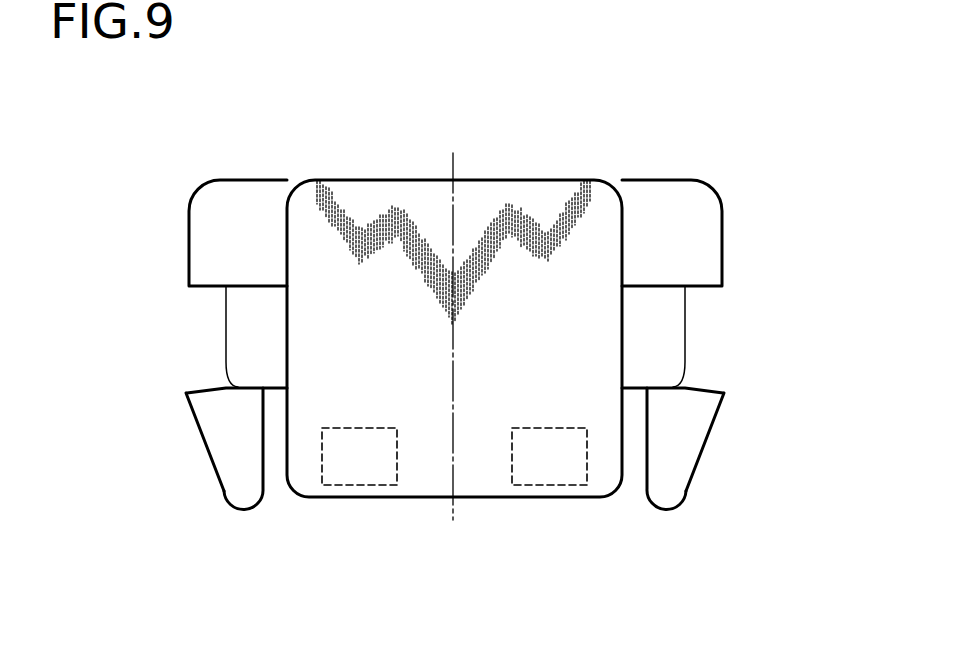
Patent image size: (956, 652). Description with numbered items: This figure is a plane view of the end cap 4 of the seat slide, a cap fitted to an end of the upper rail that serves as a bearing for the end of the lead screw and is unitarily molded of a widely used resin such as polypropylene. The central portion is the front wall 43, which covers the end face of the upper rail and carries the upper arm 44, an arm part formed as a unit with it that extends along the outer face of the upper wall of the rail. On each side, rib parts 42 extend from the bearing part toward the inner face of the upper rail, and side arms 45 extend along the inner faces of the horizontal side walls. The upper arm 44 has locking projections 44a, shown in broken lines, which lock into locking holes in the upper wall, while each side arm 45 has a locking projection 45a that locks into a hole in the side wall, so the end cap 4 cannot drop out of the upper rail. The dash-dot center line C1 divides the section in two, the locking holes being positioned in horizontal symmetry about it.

The end cap 4 is at (603, 178).
The front wall 43 is at (262, 178).
The center line C1 is at (453, 192).
The upper arm 44 is at (504, 217).
The rib parts 42 is at (248, 334).
The side arms 45 is at (232, 386).
The locking projection 45a is at (185, 398).
The locking projections 44a is at (353, 486).